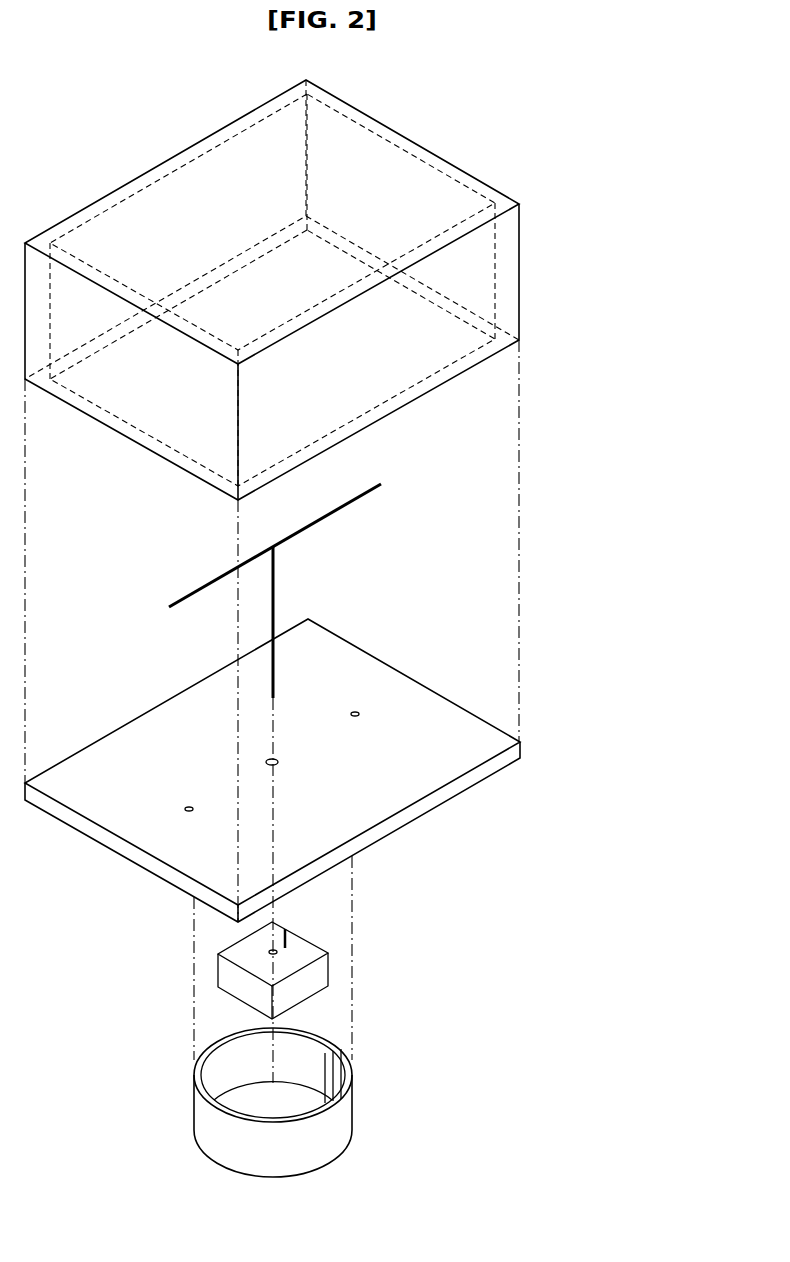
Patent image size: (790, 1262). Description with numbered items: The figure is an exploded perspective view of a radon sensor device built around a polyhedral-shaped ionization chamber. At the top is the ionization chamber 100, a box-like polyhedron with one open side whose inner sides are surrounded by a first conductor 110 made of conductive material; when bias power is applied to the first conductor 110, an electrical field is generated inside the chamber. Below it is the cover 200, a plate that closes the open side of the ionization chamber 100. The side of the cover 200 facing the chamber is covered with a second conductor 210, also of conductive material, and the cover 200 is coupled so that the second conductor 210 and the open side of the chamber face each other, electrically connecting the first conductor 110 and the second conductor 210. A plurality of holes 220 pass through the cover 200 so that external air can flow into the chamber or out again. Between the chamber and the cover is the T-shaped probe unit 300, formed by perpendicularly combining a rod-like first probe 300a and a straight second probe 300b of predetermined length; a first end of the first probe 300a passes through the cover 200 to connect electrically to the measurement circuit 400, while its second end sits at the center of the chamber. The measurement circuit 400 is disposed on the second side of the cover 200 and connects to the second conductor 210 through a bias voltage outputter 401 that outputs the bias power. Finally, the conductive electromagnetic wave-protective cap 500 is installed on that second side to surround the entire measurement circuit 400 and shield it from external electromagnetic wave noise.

The ionization chamber 100 is at (321, 279).
The first conductor 110 is at (480, 271).
The cover 200 is at (308, 728).
The second conductor 210 is at (323, 652).
The holes 220 is at (189, 806).
The probe unit 300 is at (280, 563).
The first probe 300a is at (273, 608).
The second probe 300b is at (376, 482).
The measurement circuit 400 is at (346, 952).
The bias voltage outputter 401 is at (290, 942).
The electromagnetic wave-protective cap 500 is at (353, 1099).